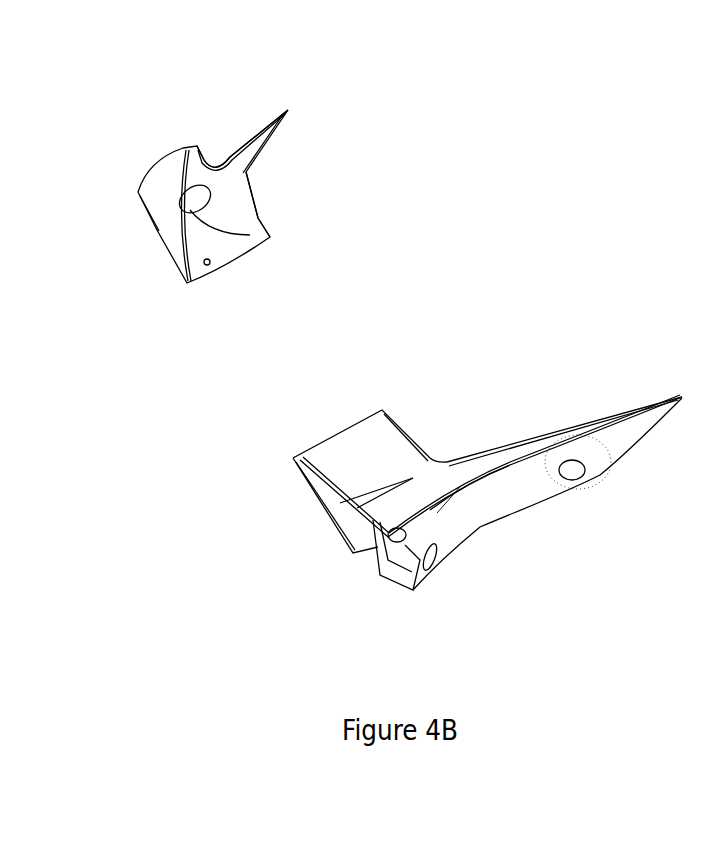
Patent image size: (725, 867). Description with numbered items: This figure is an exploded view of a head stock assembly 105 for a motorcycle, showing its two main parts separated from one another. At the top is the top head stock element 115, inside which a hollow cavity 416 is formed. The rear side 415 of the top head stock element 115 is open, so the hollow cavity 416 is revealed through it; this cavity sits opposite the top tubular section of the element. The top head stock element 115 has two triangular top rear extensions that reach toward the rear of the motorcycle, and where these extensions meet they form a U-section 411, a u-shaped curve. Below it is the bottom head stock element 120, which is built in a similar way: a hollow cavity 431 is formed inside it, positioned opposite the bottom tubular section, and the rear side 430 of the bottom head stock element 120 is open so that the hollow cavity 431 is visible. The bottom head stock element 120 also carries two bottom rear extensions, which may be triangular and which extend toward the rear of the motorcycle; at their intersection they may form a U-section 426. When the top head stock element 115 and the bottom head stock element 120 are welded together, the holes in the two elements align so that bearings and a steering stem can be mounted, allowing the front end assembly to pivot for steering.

The top head stock element 115 is at (112, 208).
The U-section 411 is at (235, 153).
The rear side 415 is at (258, 218).
The hollow cavity 416 is at (213, 240).
The bottom head stock element 120 is at (247, 438).
The hollow cavity 431 is at (362, 445).
The rear side 430 is at (332, 480).
The U-section 426 is at (493, 470).
The pad assembly 105 is at (316, 645).